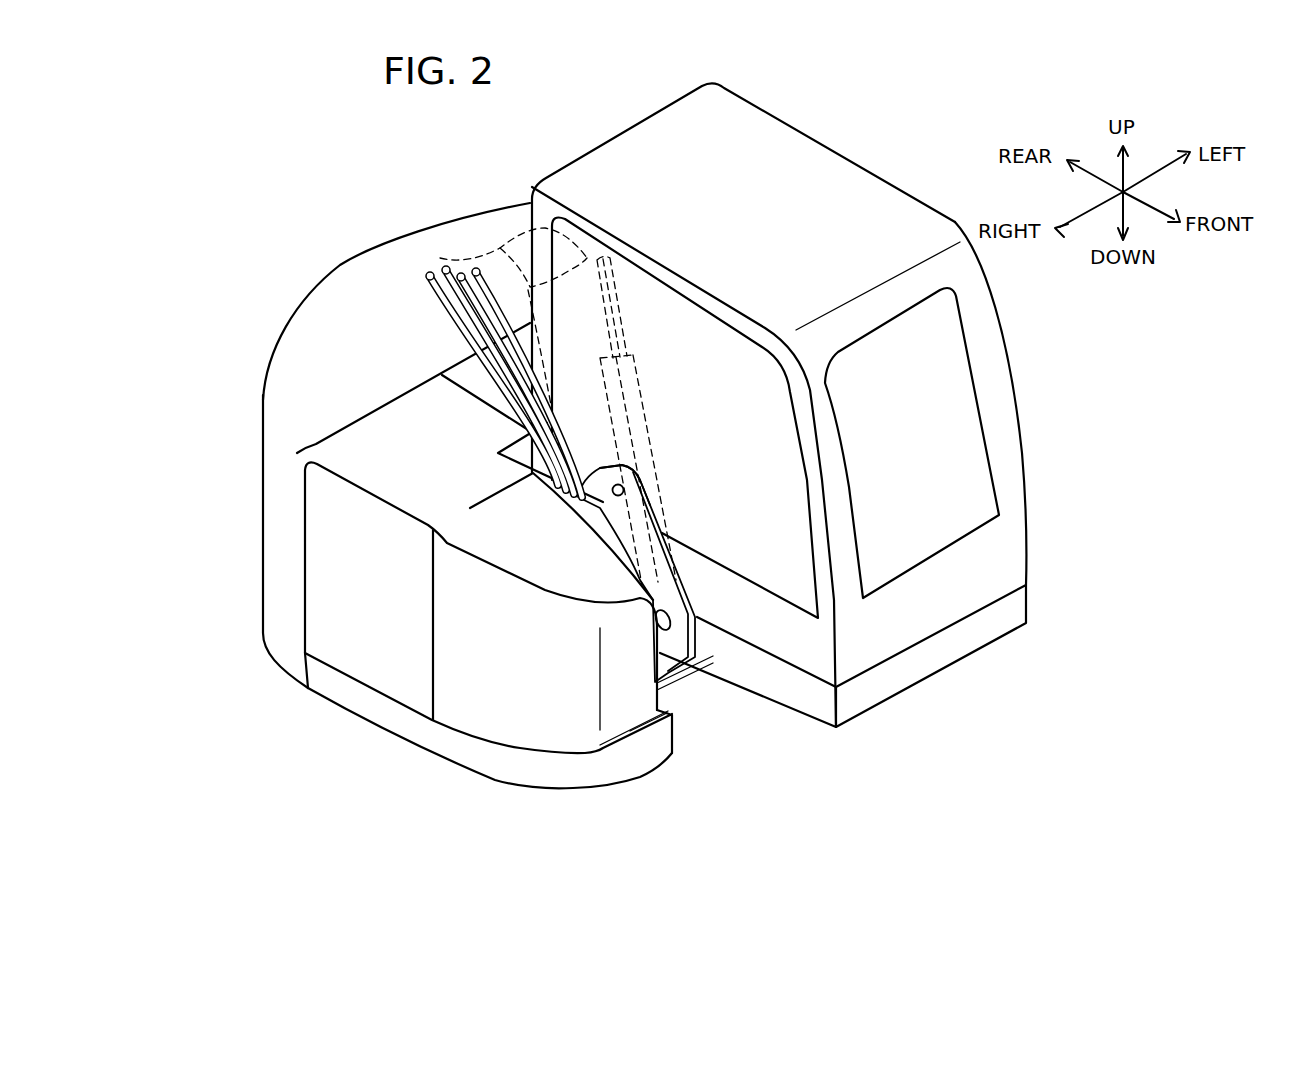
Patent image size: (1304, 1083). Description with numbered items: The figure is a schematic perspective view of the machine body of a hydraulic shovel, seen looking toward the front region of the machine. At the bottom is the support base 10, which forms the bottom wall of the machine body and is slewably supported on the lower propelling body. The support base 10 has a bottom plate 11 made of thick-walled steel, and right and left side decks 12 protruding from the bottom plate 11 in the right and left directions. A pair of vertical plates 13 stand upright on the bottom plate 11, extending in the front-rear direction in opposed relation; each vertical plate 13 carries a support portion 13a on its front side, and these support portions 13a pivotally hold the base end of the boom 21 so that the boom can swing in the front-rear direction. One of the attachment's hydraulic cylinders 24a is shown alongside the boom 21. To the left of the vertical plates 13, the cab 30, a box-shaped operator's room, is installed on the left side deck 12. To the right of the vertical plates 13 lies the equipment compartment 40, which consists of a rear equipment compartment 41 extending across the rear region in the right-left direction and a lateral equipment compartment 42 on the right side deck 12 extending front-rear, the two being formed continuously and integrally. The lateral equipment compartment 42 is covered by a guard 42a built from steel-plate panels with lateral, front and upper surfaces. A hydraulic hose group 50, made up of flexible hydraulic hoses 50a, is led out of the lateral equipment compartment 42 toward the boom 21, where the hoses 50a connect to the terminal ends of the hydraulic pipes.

The support base 10 is at (828, 708).
The bottom plate 11 is at (683, 676).
The side decks 12 is at (642, 745).
The vertical plates 13 is at (683, 585).
The support portion 13a is at (664, 512).
The boom 21 is at (500, 248).
The hydraulic cylinder 24a is at (642, 396).
The cab 30 is at (860, 163).
The equipment compartment 40 is at (412, 533).
The rear equipment compartment 41 is at (287, 381).
The lateral equipment compartment 42 is at (440, 619).
The guard 42a is at (520, 700).
The hydraulic hose group 50 is at (472, 342).
The hydraulic hoses 50a is at (426, 278).